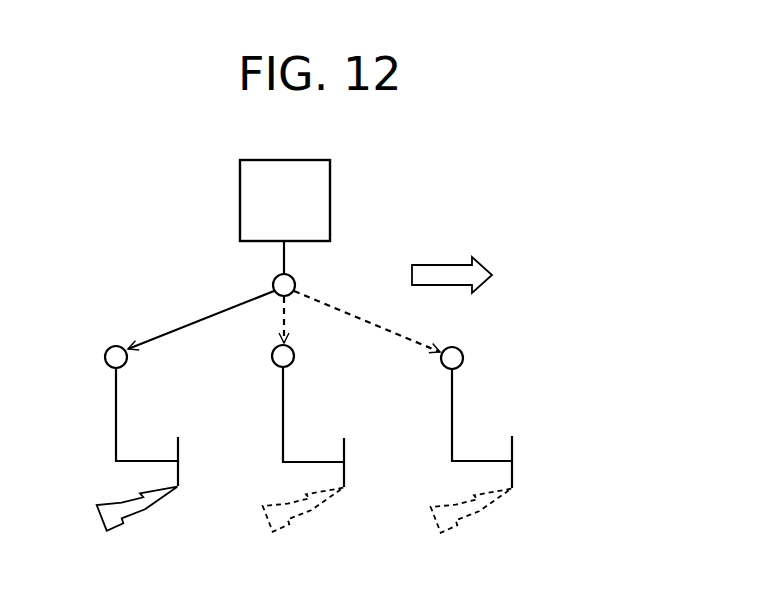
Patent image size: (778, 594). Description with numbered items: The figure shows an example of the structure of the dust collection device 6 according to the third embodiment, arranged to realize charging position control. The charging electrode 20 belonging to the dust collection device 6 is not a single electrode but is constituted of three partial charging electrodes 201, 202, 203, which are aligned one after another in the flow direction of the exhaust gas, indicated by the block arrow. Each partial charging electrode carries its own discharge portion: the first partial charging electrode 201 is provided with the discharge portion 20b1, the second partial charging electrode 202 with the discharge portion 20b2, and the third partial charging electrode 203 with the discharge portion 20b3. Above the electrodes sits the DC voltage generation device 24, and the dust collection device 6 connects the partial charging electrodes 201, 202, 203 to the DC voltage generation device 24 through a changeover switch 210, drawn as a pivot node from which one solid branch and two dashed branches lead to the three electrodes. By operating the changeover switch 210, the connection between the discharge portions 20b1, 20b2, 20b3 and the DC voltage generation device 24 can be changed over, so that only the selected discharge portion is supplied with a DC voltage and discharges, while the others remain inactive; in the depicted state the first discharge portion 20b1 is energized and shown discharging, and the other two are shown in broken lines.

The DC voltage generation device 24 is at (240, 200).
The dust collection device 6 is at (390, 196).
The changeover switch 210 is at (216, 303).
The charging electrode 20 is at (478, 332).
The first partial charging electrode 201 is at (117, 410).
The second partial charging electrode 202 is at (285, 410).
The third partial charging electrode 203 is at (453, 410).
The discharge portion 20b1 is at (178, 443).
The discharge portion 20b2 is at (345, 445).
The discharge portion 20b3 is at (512, 443).